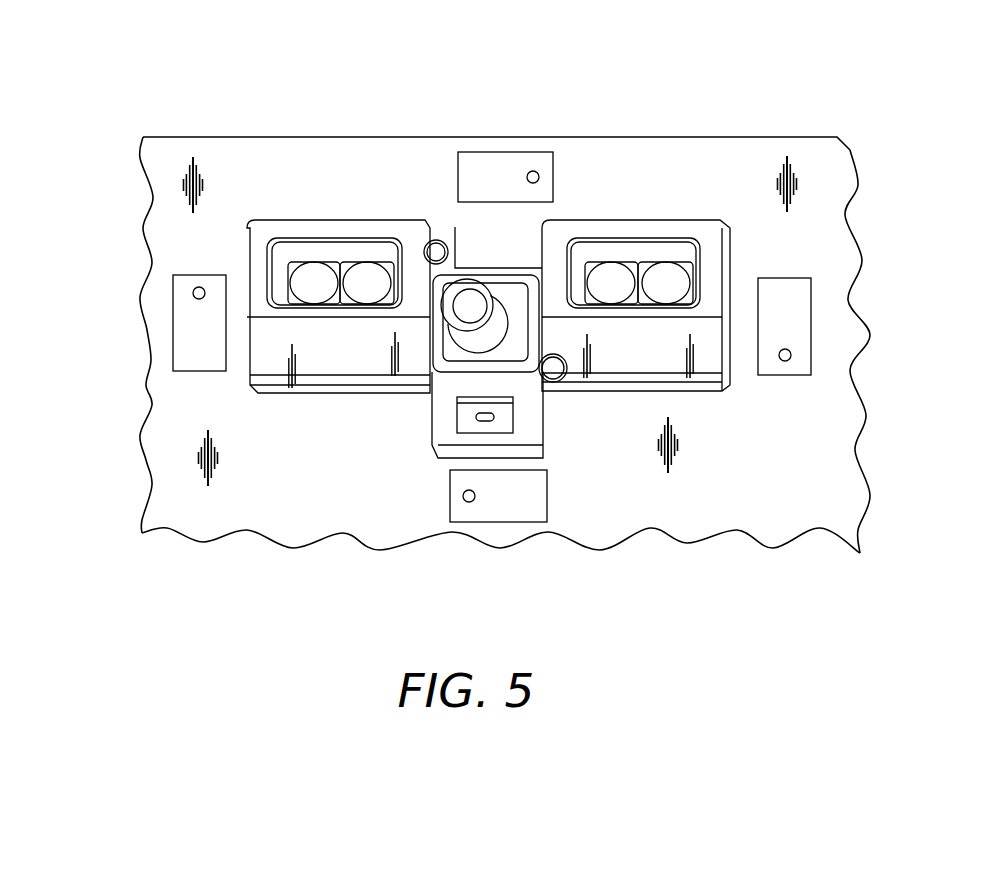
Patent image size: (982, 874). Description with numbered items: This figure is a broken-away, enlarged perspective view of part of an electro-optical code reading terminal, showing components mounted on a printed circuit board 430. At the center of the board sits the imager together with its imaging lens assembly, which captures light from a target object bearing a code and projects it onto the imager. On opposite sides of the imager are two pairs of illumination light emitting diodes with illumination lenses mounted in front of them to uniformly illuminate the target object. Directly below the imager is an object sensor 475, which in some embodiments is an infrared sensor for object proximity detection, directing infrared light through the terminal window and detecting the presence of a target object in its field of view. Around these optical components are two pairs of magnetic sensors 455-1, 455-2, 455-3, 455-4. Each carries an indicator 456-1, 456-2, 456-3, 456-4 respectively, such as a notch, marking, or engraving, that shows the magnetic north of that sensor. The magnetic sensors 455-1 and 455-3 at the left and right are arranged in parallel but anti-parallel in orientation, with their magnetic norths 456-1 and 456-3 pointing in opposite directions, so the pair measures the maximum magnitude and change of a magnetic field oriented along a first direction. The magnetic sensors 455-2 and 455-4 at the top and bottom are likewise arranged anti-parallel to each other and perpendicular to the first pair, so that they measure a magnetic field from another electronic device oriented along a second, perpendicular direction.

The printed circuit board 430 is at (165, 406).
The object sensor 475 is at (478, 416).
The magnetic sensor 455-1 is at (173, 330).
The magnetic sensor 455-2 is at (507, 152).
The magnetic sensor 455-3 is at (787, 278).
The magnetic sensor 455-4 is at (547, 496).
The indicator 456-1 is at (201, 287).
The indicator 456-2 is at (539, 175).
The indicator 456-3 is at (786, 361).
The indicator 456-4 is at (471, 502).